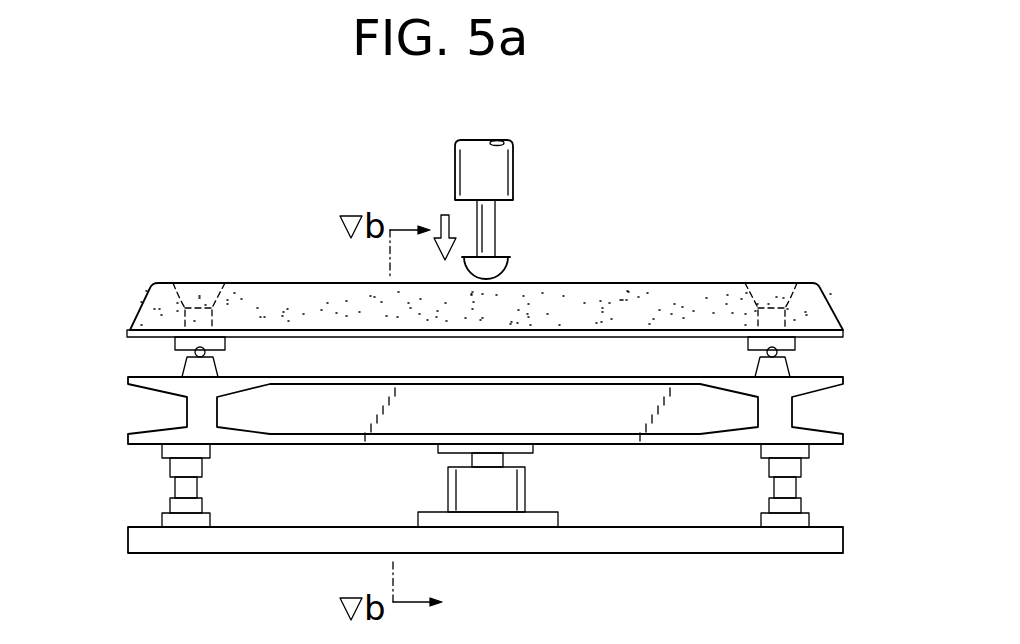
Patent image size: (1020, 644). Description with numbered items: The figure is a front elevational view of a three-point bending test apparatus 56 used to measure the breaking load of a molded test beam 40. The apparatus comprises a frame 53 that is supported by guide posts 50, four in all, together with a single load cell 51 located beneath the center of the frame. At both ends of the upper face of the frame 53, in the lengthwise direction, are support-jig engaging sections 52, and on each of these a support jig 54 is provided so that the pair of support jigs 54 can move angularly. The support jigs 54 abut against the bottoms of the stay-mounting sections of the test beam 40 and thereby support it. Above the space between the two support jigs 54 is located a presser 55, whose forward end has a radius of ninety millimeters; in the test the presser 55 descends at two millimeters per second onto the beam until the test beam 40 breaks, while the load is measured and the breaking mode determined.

The test beam 40 is at (710, 283).
The guide post 50 is at (175, 480).
The load cell 51 is at (448, 482).
The support-jig engaging section 52 is at (185, 368).
The frame 53 is at (232, 411).
The support jig 54 is at (173, 348).
The presser 55 is at (512, 271).
The three-point bending test apparatus 56 is at (570, 208).